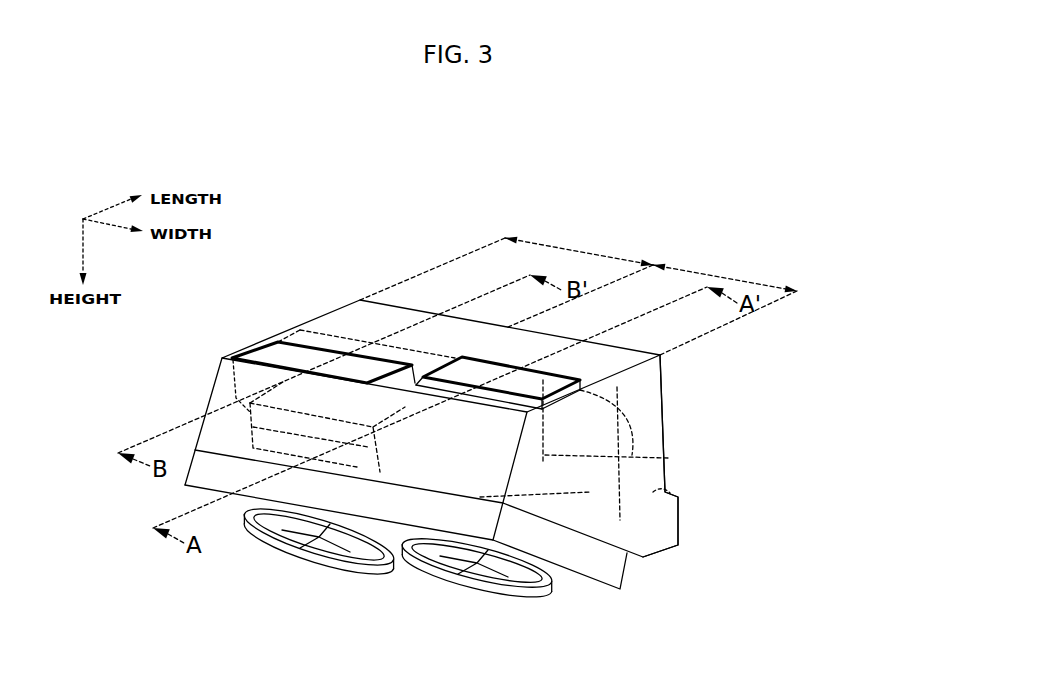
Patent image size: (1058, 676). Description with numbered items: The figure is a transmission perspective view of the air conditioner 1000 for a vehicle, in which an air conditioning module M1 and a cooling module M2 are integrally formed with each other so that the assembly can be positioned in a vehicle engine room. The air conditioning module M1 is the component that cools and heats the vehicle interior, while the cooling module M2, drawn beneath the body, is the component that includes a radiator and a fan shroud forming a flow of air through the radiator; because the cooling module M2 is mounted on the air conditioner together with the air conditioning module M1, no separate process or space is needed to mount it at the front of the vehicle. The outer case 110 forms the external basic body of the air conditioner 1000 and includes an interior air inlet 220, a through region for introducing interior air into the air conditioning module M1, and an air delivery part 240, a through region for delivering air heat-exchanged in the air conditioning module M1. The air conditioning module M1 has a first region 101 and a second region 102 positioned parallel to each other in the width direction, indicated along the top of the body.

The air conditioner for a vehicle 1000 is at (698, 160).
The first region 101 is at (725, 303).
The second region 102 is at (506, 274).
The outer case 110 is at (680, 497).
The interior air inlet 220 is at (668, 458).
The air delivery part 240 is at (276, 341).
The air conditioning module M1 is at (335, 301).
The cooling module M2 is at (262, 578).